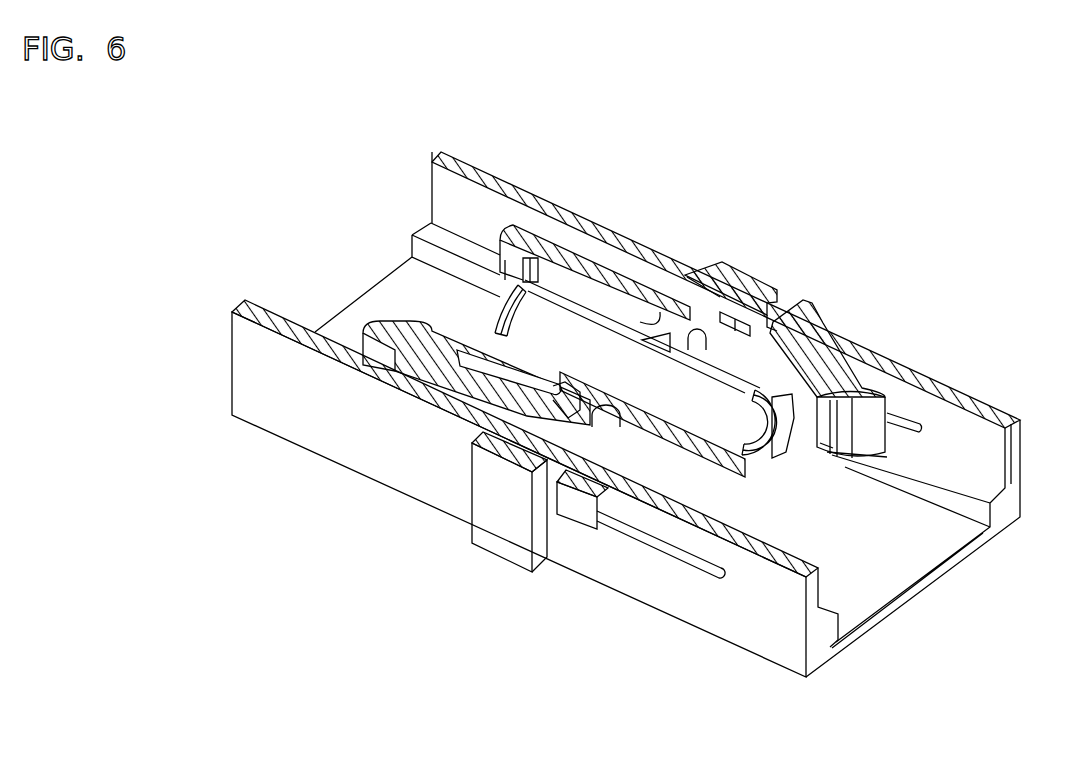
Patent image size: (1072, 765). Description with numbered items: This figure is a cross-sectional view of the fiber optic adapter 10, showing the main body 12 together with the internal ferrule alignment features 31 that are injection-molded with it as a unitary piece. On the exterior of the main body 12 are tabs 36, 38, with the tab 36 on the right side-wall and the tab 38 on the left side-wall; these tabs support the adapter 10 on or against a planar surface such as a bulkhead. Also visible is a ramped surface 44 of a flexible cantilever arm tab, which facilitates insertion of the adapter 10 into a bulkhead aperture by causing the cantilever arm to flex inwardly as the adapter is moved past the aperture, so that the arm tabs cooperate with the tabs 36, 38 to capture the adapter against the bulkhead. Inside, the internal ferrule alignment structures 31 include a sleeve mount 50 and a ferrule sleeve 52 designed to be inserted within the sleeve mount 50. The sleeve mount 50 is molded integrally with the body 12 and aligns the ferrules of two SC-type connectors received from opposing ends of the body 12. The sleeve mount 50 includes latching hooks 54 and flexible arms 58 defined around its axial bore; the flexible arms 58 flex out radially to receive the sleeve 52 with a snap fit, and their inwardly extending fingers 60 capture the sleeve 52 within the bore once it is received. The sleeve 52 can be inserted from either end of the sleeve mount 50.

The fiber optic adapter 10 is at (437, 558).
The main body 12 is at (758, 637).
The internal ferrule alignment features 31 is at (843, 458).
The tab 36 is at (507, 547).
The tab 38 is at (752, 277).
The ramped surface 44 is at (583, 500).
The sleeve mount 50 is at (673, 330).
The ferrule sleeve 52 is at (660, 378).
The latching hook 54 is at (395, 337).
The flexible arm 58 is at (778, 440).
The finger 60 is at (518, 303).